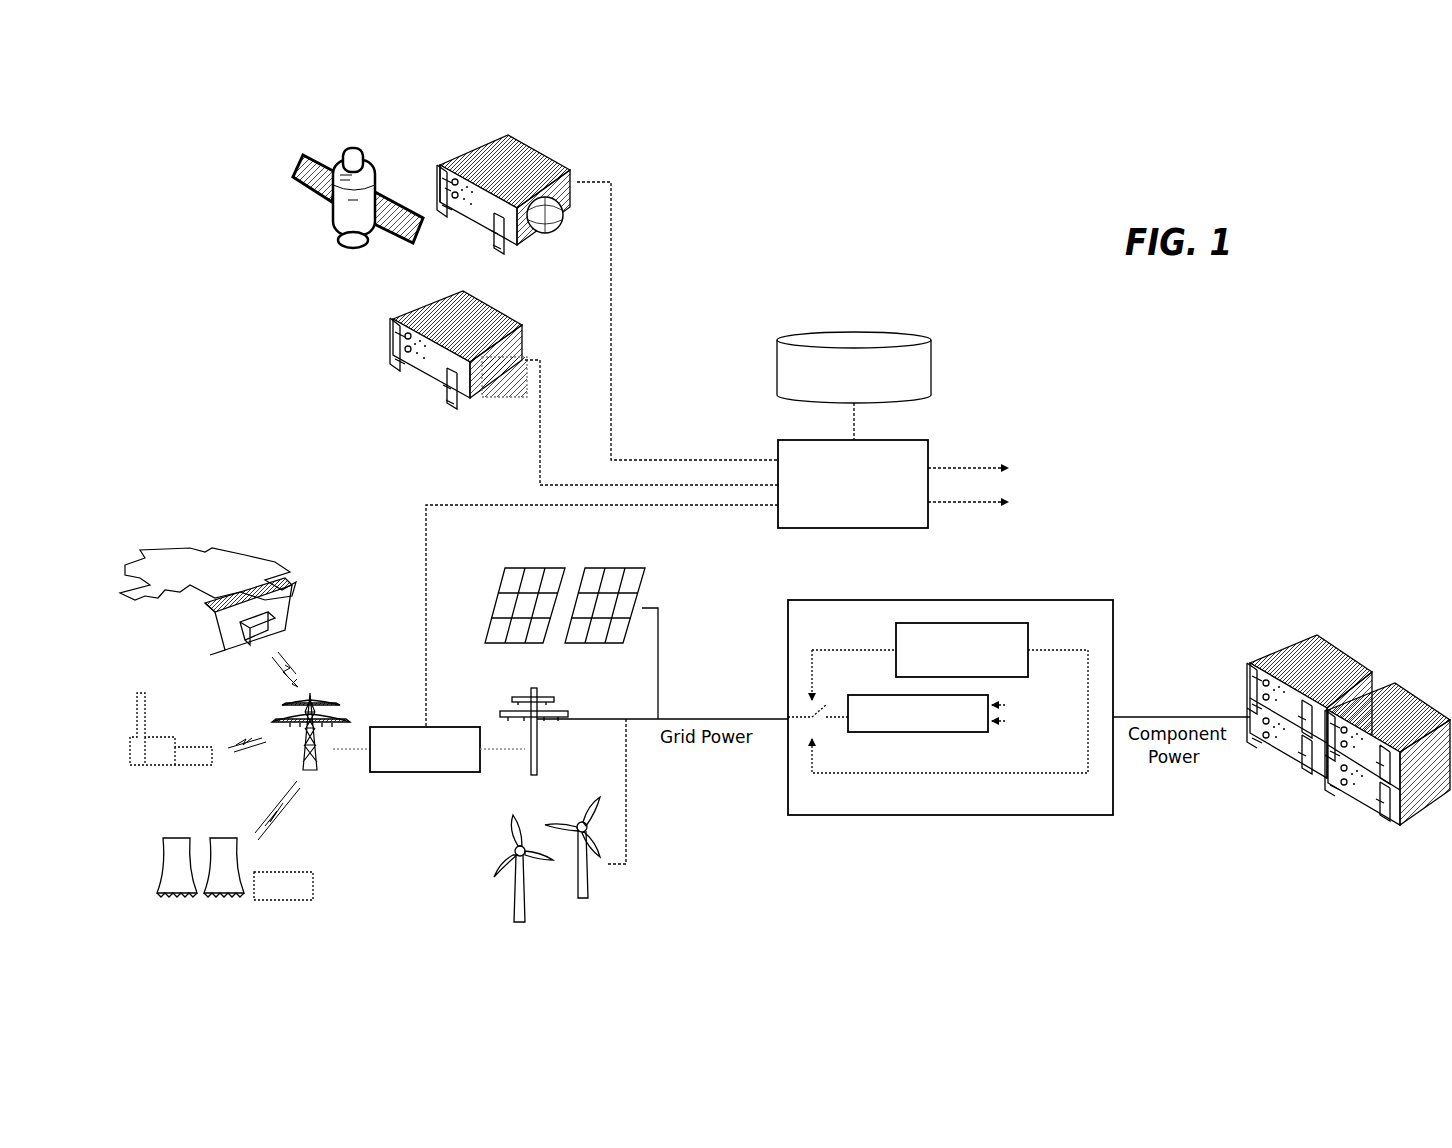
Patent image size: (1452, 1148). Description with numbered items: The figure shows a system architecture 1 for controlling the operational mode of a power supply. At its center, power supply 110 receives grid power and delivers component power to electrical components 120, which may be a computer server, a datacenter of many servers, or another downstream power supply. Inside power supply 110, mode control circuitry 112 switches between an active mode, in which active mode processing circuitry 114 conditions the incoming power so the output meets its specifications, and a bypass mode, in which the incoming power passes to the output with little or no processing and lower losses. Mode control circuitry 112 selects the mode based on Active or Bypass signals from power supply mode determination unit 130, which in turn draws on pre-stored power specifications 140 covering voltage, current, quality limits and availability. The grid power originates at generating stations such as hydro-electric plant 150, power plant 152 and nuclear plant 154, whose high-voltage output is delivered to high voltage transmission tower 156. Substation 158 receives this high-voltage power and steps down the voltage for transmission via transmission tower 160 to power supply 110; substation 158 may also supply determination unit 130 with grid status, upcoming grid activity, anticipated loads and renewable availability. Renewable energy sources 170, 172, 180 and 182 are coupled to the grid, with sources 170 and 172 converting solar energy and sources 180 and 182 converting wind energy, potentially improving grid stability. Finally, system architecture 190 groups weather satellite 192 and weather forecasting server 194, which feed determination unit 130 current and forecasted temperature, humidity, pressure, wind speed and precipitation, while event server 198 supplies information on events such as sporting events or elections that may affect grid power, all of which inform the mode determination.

The system architecture 1 is at (908, 215).
The power supply 110 is at (1025, 600).
The mode control circuitry 112 is at (908, 733).
The active mode processing circuitry 114 is at (1030, 645).
The electrical components 120 is at (1384, 646).
The power supply mode determination unit 130 is at (888, 440).
The power specifications 140 is at (893, 333).
The hydro-electric plant 150 is at (278, 580).
The power plant 152 is at (157, 735).
The nuclear plant 154 is at (260, 855).
The high voltage transmission tower 156 is at (332, 703).
The substation 158 is at (445, 727).
The transmission tower 160 is at (556, 707).
The renewable energy source 170 is at (543, 568).
The renewable energy source 172 is at (622, 568).
The renewable energy source 180 is at (517, 906).
The renewable energy source 182 is at (578, 892).
The system architecture 190 is at (452, 103).
The weather satellite 192 is at (352, 148).
The weather forecasting server 194 is at (530, 155).
The event server 198 is at (488, 318).